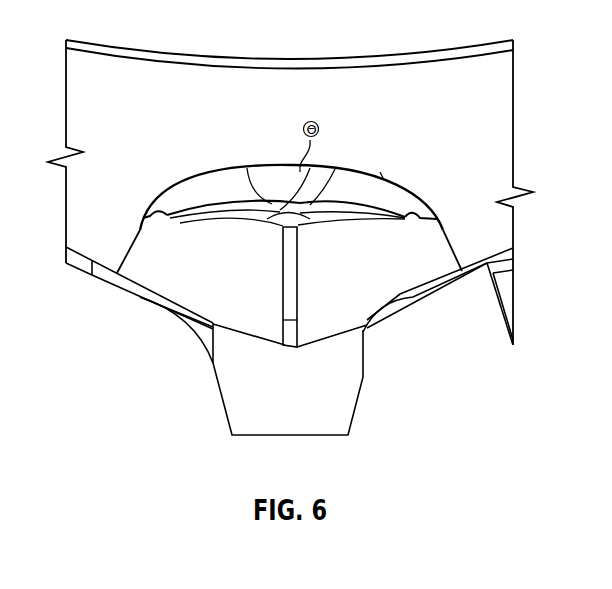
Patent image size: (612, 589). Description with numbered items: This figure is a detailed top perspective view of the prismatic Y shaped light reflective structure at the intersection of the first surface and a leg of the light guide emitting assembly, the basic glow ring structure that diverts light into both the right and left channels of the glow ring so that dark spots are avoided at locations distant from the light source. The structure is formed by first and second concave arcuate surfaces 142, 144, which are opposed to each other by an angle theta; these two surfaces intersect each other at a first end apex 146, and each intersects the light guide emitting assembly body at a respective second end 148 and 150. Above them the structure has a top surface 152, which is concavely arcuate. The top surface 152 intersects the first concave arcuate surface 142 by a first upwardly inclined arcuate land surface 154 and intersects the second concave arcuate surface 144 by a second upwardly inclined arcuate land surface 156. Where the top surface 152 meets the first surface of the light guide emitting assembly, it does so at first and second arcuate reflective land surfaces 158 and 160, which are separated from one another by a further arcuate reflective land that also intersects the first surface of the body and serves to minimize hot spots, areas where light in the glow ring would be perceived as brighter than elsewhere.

The first concave arcuate surface 142 is at (277, 177).
The second concave arcuate surface 144 is at (352, 278).
The first end apex 146 is at (286, 283).
The second end 148 is at (134, 222).
The second end 150 is at (443, 231).
The top surface 152 is at (328, 213).
The first upwardly inclined arcuate land surface 154 is at (197, 214).
The second upwardly inclined arcuate land surface 156 is at (367, 218).
The first arcuate reflective land surface 158 is at (232, 184).
The second arcuate reflective land surface 160 is at (385, 184).